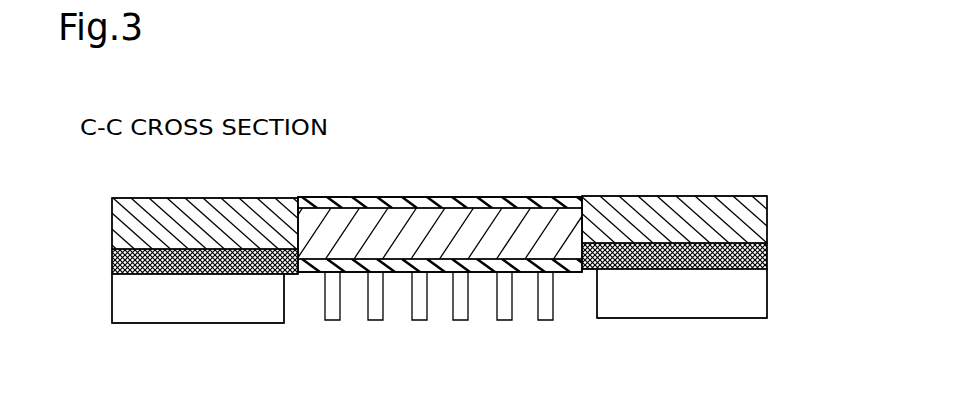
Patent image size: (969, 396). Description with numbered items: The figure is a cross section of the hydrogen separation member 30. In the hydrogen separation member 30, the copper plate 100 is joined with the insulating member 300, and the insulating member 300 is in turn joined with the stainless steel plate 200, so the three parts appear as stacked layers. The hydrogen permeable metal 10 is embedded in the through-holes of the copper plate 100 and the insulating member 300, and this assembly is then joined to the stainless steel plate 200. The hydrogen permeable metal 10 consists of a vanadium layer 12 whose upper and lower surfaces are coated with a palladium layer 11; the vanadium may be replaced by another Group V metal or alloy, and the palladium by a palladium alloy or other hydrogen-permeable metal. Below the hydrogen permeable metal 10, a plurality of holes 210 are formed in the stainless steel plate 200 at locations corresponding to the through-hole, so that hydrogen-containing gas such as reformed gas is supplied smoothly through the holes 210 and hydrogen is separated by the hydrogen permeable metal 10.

The hydrogen separation member 30 is at (663, 168).
The hydrogen permeable metal 10 is at (541, 197).
The palladium layer 11 is at (410, 197).
The vanadium layer 12 is at (470, 220).
The copper plate 100 is at (760, 215).
The insulating member 300 is at (765, 250).
The stainless steel plate 200 is at (760, 292).
The holes 210 is at (523, 300).